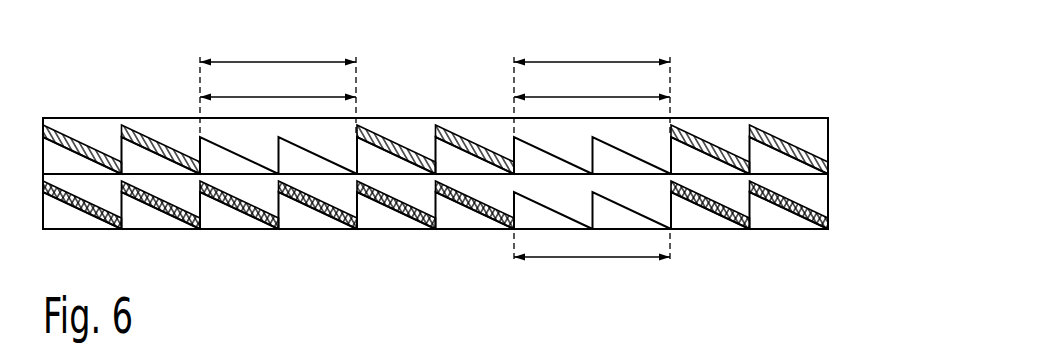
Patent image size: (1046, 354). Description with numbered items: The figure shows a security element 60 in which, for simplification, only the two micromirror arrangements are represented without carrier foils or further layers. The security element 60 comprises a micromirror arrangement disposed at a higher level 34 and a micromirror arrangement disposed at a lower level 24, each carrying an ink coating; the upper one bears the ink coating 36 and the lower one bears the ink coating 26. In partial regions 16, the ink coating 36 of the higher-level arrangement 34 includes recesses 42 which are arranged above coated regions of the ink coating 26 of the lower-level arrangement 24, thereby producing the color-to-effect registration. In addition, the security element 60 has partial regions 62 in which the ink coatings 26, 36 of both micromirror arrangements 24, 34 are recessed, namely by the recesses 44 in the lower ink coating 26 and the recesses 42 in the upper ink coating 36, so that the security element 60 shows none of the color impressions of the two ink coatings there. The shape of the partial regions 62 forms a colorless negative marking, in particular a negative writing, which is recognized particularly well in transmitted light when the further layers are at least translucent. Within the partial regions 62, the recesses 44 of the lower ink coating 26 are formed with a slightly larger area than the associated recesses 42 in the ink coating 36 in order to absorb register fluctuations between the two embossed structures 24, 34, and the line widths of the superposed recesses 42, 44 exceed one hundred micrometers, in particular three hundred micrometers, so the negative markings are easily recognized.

The security element 60 is at (56, 84).
The micromirror arrangement disposed at a higher level 34 is at (83, 137).
The ink coating 36 is at (147, 140).
The micromirror arrangement disposed at a lower level 24 is at (75, 208).
The ink coating 26 is at (152, 208).
The partial regions 16 is at (278, 86).
The recesses 42 is at (435, 85).
The partial regions 62 is at (592, 86).
The recesses 44 is at (592, 259).